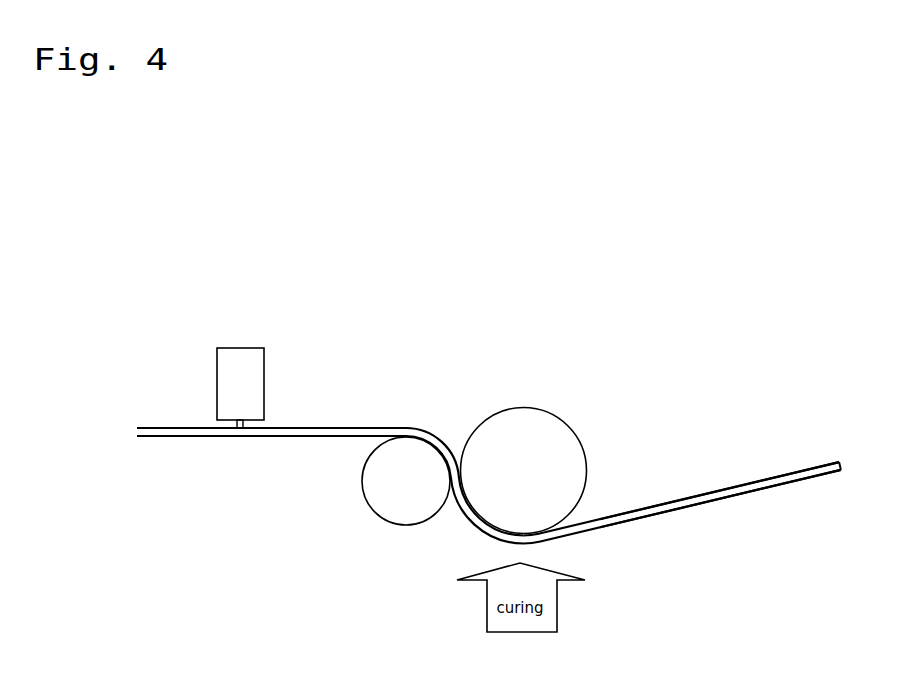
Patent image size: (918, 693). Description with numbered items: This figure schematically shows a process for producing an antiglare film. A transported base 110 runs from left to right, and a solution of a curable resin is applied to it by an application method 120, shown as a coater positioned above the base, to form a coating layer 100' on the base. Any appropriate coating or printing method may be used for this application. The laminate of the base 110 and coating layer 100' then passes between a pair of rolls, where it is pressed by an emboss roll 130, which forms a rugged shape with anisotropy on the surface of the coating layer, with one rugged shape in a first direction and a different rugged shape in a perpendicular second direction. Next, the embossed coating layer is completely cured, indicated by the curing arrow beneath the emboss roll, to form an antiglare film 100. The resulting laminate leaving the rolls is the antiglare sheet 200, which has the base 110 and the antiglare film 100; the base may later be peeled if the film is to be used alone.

The base 110 is at (178, 437).
The coating layer 100' is at (382, 455).
The antiglare film 100 is at (682, 510).
The antiglare sheet 200 is at (815, 475).
The application method 120 is at (255, 368).
The emboss roll 130 is at (558, 423).